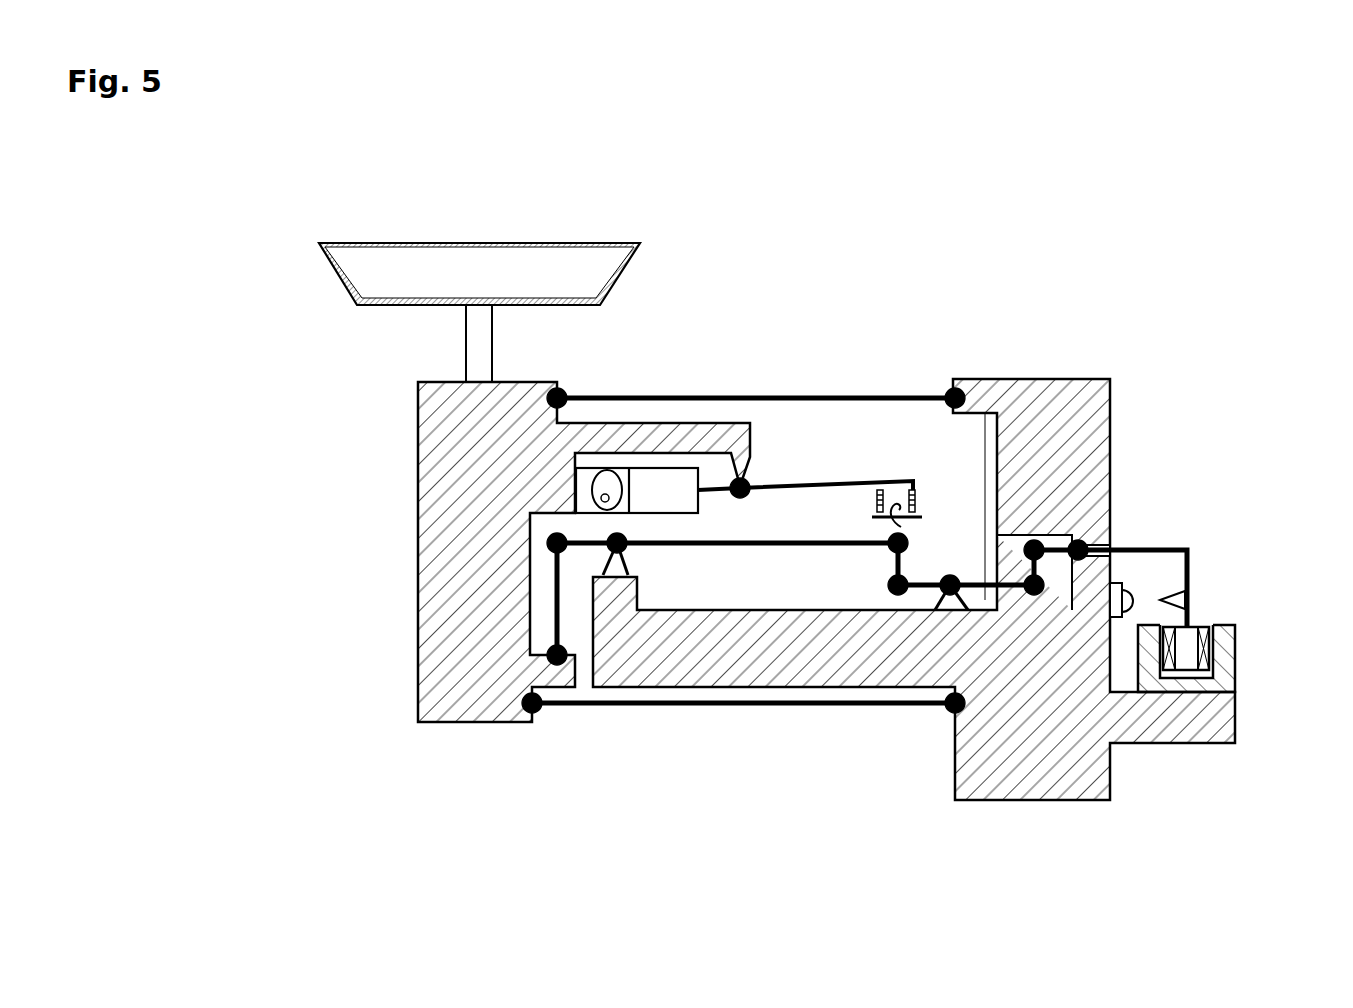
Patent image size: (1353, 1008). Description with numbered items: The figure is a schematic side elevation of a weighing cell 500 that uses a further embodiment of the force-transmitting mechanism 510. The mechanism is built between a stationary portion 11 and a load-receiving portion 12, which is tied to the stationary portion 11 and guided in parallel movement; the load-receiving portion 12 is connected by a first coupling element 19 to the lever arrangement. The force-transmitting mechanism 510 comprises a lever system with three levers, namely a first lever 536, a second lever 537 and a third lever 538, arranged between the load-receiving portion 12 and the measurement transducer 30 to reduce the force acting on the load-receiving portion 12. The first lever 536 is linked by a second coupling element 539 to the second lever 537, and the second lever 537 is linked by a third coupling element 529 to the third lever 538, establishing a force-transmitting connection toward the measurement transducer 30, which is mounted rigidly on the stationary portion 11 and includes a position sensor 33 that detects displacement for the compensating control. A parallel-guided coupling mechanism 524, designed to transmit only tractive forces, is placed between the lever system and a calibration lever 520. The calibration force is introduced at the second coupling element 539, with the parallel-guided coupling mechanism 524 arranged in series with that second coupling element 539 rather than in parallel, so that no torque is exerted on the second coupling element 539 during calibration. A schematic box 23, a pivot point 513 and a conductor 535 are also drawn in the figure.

The weighing cell 500 is at (1073, 330).
The stationary portion 11 is at (1017, 768).
The load-receiving portion 12 is at (434, 698).
The first coupling element 19 is at (556, 580).
The control unit 23 is at (654, 507).
The measurement transducer 30 is at (1223, 657).
The position sensor 33 is at (1212, 598).
The force-transmitting mechanism 510 is at (723, 563).
The pivot 513 is at (738, 480).
The calibration lever 520 is at (777, 483).
The parallel-guided coupling mechanism 524 is at (858, 360).
The third coupling element 529 is at (1045, 565).
The conductor segment 535 is at (1073, 580).
The first lever 536 is at (758, 545).
The second lever 537 is at (986, 580).
The third lever 538 is at (1113, 547).
The second coupling element 539 is at (837, 695).